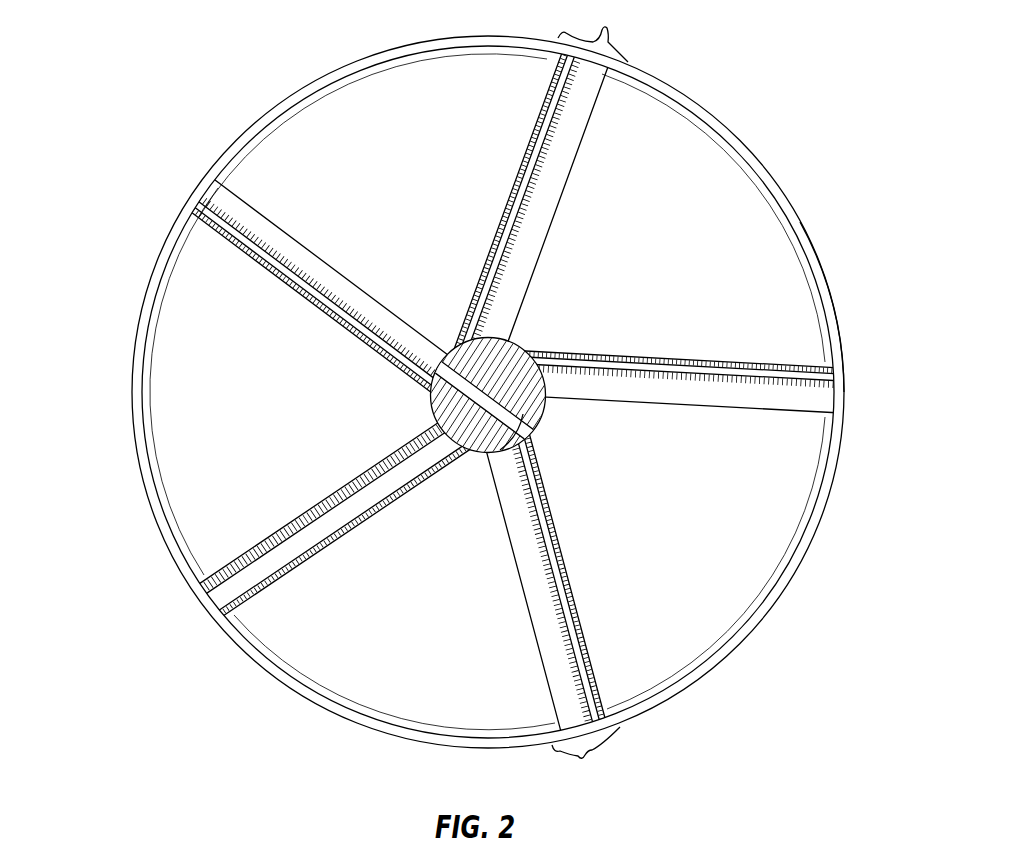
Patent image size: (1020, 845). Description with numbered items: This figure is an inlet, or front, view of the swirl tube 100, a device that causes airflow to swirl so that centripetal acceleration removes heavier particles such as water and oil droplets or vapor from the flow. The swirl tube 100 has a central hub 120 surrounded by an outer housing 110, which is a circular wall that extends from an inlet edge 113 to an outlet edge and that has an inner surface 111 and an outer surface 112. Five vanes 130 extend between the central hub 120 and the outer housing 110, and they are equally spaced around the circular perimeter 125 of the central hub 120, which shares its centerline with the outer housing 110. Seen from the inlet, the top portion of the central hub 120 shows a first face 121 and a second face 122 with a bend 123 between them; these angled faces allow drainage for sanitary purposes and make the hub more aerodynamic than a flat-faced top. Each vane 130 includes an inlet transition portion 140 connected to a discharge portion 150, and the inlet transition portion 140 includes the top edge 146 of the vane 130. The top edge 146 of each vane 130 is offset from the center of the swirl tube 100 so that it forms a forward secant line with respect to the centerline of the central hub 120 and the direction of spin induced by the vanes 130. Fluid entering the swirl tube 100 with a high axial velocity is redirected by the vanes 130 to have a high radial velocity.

The swirl tube 100 is at (123, 66).
The outer housing 110 is at (541, 392).
The inner surface 111 is at (152, 442).
The outer surface 112 is at (845, 458).
The inlet edge 113 is at (705, 663).
The central hub 120 is at (458, 387).
The first face 121 is at (434, 389).
The second face 122 is at (510, 357).
The bend 123 is at (450, 358).
The circular perimeter 125 is at (523, 414).
The vanes 130 is at (355, 115).
The inlet transition portion 140 is at (607, 29).
The top edge 146 is at (288, 574).
The discharge portion 150 is at (752, 320).